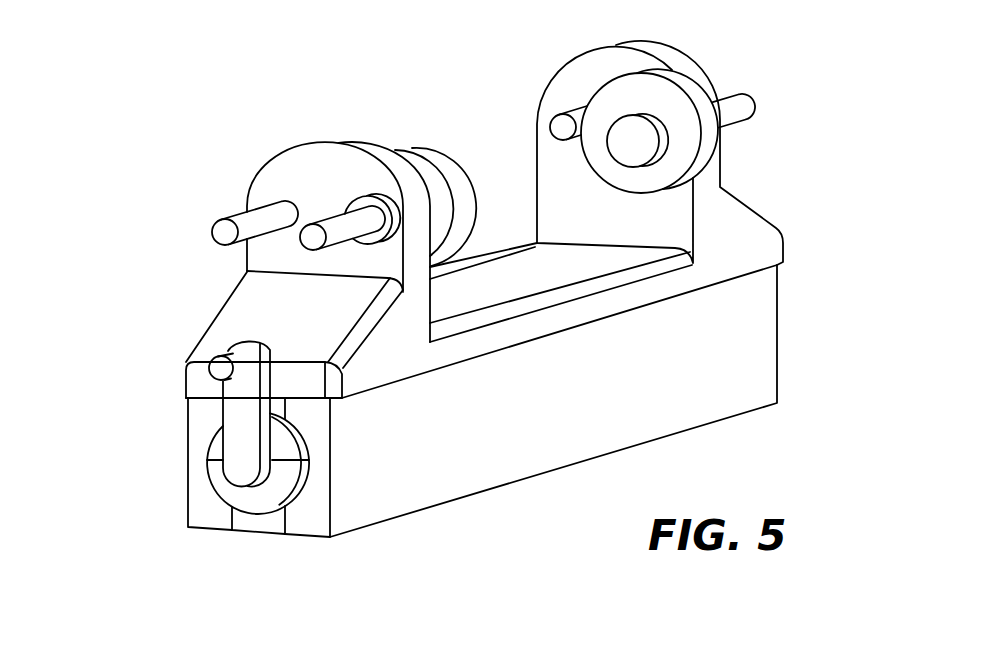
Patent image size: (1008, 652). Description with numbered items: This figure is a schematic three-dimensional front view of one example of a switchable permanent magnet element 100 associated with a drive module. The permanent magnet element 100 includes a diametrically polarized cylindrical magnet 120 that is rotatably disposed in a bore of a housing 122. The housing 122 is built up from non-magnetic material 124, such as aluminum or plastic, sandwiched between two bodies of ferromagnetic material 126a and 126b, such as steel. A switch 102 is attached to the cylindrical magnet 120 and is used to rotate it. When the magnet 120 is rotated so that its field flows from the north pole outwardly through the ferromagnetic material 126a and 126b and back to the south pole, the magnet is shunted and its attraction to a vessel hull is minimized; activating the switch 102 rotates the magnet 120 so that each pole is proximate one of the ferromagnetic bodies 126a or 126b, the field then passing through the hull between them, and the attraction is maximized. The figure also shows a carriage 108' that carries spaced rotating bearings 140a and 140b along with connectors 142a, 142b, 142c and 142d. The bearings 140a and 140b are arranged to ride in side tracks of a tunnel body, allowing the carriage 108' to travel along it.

The permanent magnet element 100 is at (157, 443).
The switch 102 is at (236, 402).
The carriage 108' is at (558, 191).
The cylindrical magnet 120 is at (215, 473).
The housing 122 is at (765, 341).
The non-magnetic material 124 is at (243, 527).
The ferromagnetic material 126a is at (303, 523).
The ferromagnetic material 126b is at (206, 508).
The rotating bearing 140a is at (427, 143).
The rotating bearing 140b is at (627, 92).
The connector 142a is at (228, 231).
The connector 142b is at (333, 217).
The connector 142c is at (743, 108).
The connector 142d is at (560, 127).